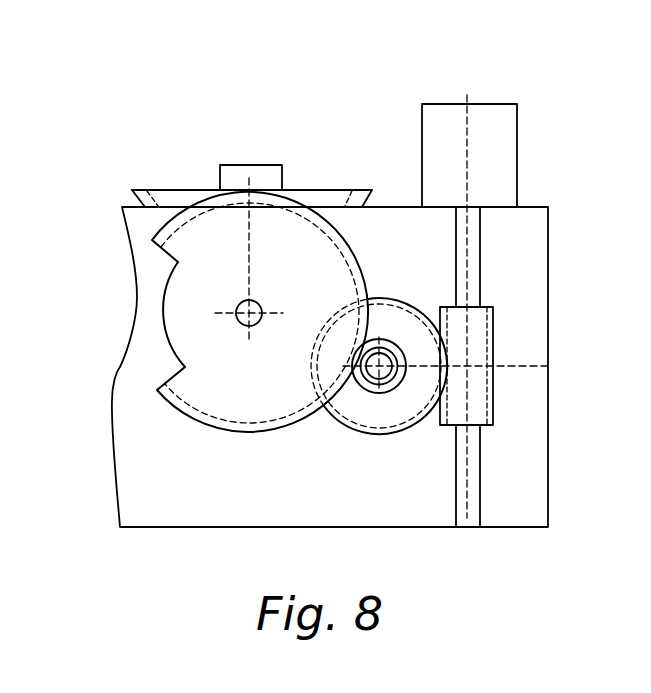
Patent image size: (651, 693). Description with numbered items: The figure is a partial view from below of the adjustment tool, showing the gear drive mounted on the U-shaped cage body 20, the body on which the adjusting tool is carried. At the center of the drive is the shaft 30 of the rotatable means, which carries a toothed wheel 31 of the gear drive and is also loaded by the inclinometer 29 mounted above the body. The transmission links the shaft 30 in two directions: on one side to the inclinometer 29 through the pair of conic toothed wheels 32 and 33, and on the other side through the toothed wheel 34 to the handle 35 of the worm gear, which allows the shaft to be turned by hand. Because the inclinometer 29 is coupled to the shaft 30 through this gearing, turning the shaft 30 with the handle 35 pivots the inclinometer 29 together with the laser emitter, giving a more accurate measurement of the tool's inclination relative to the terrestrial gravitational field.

The U-shaped cage body 20 is at (178, 462).
The inclinometer 29 is at (263, 175).
The shaft 30 is at (367, 377).
The toothed wheel 31 is at (397, 383).
The conic toothed wheel 32 is at (180, 325).
The conic toothed wheel 33 is at (163, 198).
The toothed wheel 34 is at (363, 433).
The handle of the worm gear 35 is at (430, 205).